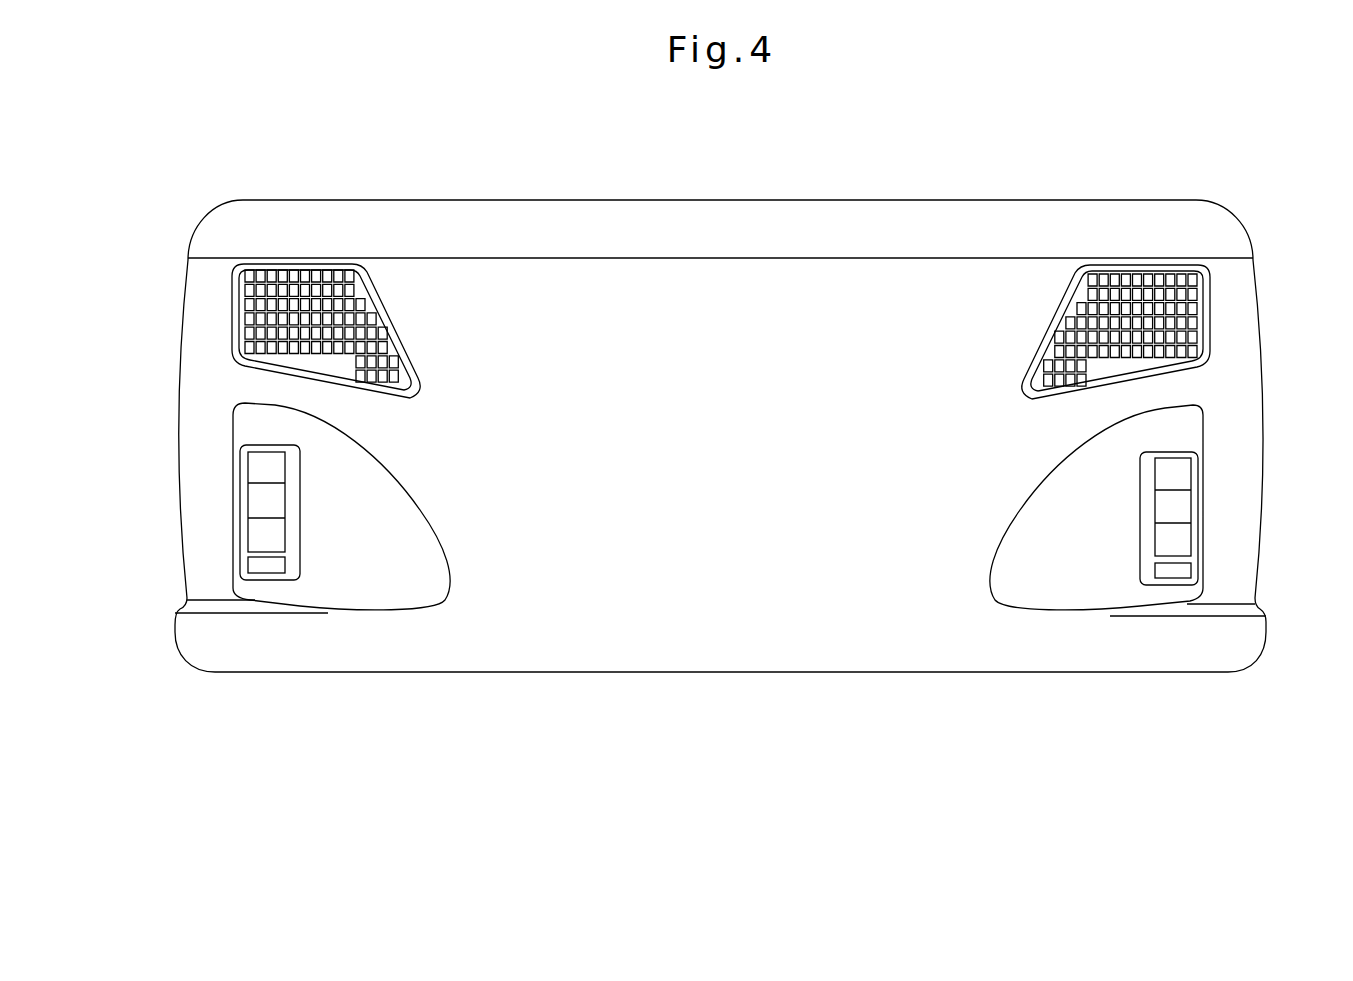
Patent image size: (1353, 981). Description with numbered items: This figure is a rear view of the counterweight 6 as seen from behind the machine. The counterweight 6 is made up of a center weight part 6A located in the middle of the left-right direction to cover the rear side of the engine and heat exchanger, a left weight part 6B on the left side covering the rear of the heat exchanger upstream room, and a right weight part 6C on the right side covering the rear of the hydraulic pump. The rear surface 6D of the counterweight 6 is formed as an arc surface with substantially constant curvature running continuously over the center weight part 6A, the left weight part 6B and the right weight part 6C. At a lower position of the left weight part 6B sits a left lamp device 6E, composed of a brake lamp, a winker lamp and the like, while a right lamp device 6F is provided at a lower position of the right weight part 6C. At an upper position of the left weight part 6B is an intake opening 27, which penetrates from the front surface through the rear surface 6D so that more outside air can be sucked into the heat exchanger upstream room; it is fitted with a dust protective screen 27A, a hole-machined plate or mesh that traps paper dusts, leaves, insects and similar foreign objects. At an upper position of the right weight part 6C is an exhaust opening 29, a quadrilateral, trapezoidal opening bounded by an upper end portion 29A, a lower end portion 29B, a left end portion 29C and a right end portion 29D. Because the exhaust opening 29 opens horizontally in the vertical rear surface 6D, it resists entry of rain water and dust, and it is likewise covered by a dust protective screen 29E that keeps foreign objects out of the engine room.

The counterweight 6 is at (735, 230).
The center weight part 6A is at (726, 650).
The left weight part 6B is at (308, 647).
The right weight part 6C is at (1172, 655).
The rear surface 6D is at (830, 313).
The left lamp device 6E is at (258, 498).
The right lamp device 6F is at (1180, 507).
The intake opening 27 is at (300, 273).
The dust protective screen 27A is at (260, 318).
The exhaust opening 29 is at (1087, 267).
The upper end portion 29A is at (1153, 282).
The lower end portion 29B is at (1113, 378).
The left end portion 29C is at (1048, 348).
The right end portion 29D is at (1188, 315).
The dust protective screen 29E is at (1157, 338).